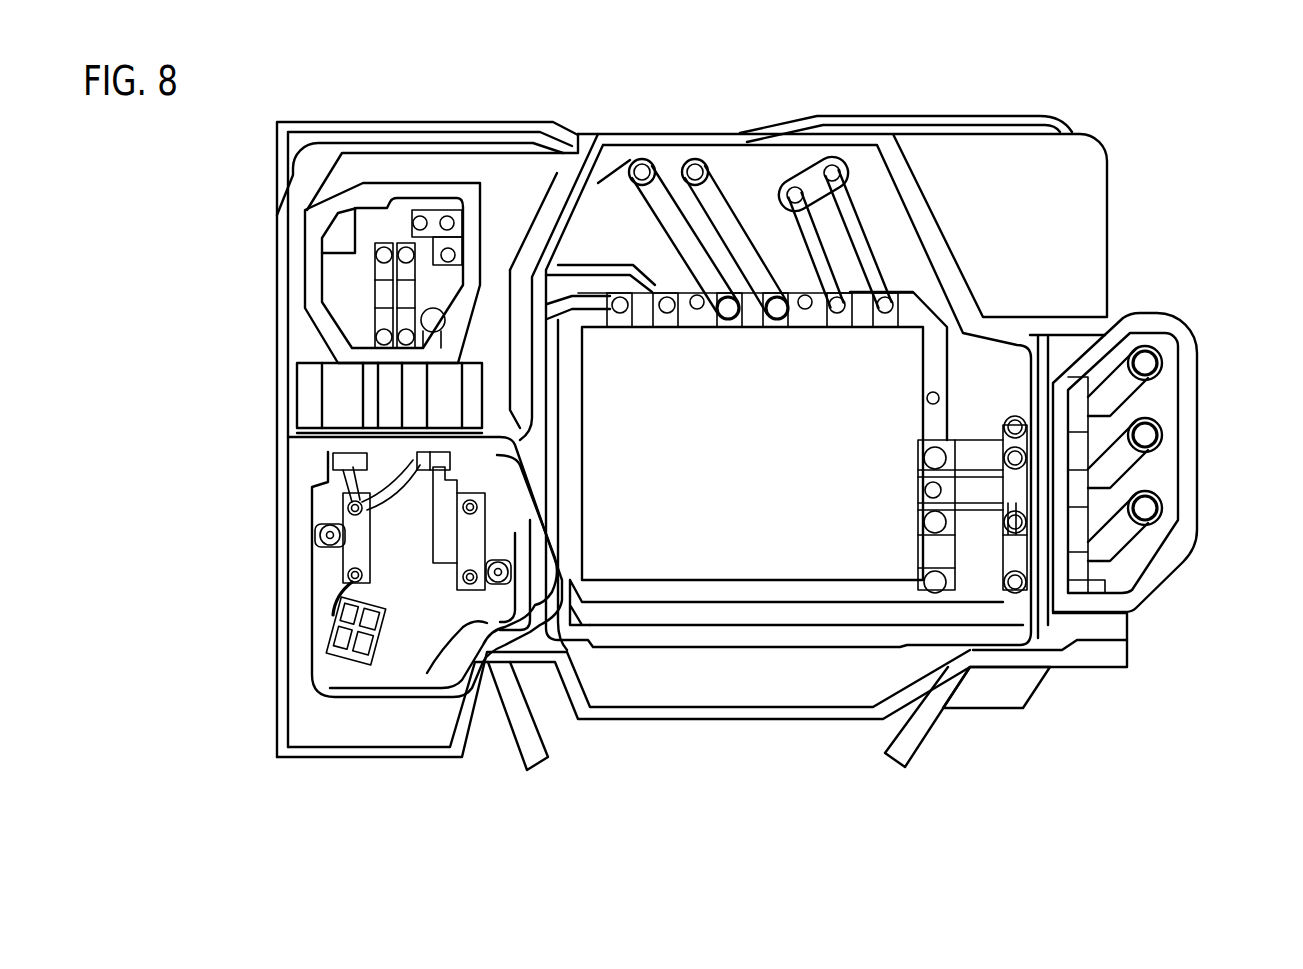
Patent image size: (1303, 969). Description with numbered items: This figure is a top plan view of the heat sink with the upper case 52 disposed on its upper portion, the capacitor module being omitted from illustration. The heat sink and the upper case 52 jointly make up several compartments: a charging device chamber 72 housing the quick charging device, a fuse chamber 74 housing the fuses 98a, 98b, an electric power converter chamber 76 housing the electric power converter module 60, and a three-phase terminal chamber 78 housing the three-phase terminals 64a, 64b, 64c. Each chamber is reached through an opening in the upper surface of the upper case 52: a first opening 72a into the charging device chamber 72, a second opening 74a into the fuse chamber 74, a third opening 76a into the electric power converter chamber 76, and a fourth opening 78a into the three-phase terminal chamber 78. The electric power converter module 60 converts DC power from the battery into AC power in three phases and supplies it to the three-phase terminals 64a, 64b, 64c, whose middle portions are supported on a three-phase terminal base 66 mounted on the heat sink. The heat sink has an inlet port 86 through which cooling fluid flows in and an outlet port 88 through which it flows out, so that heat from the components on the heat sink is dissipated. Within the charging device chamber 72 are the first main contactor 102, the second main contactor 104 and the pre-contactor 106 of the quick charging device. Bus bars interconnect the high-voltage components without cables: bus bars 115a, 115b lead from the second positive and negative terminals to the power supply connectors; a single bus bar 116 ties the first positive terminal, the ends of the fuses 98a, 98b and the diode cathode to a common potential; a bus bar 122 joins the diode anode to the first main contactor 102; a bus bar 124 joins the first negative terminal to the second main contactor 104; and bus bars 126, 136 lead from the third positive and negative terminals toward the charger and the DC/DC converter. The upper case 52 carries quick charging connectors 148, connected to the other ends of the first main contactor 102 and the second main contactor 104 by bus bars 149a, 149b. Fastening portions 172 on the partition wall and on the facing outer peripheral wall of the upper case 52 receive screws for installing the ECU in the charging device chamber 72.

The upper case 52 is at (362, 735).
The electric power converter module 60 is at (910, 378).
The three-phase terminal 64a is at (1133, 527).
The three-phase terminal 64b is at (1138, 453).
The three-phase terminal 64c is at (1128, 382).
The three-phase terminal base 66 is at (1022, 494).
The charging device chamber 72 is at (382, 667).
The first opening 72a is at (477, 620).
The fuse chamber 74 is at (356, 272).
The second opening 74a is at (325, 280).
The electric power converter chamber 76 is at (736, 616).
The third opening 76a is at (798, 625).
The three-phase terminal chamber 78 is at (1163, 390).
The fourth opening 78a is at (1168, 495).
The inlet port 86 is at (518, 742).
The outlet port 88 is at (905, 745).
The fuse 98a is at (380, 273).
The fuse 98b is at (405, 258).
The first main contactor 102 is at (350, 560).
The second main contactor 104 is at (477, 527).
The pre-contactor 106 is at (340, 652).
The bus bar 115a is at (635, 165).
The bus bar 115b is at (703, 185).
The bus bar 116 is at (590, 312).
The bus bar 122 is at (428, 458).
The bus bar 124 is at (587, 270).
The bus bar 126 is at (822, 268).
The bus bar 136 is at (850, 185).
The quick charging connectors 148 is at (337, 397).
The bus bar 149a is at (345, 480).
The bus bar 149b is at (437, 505).
The fastening portion 172 is at (320, 533).